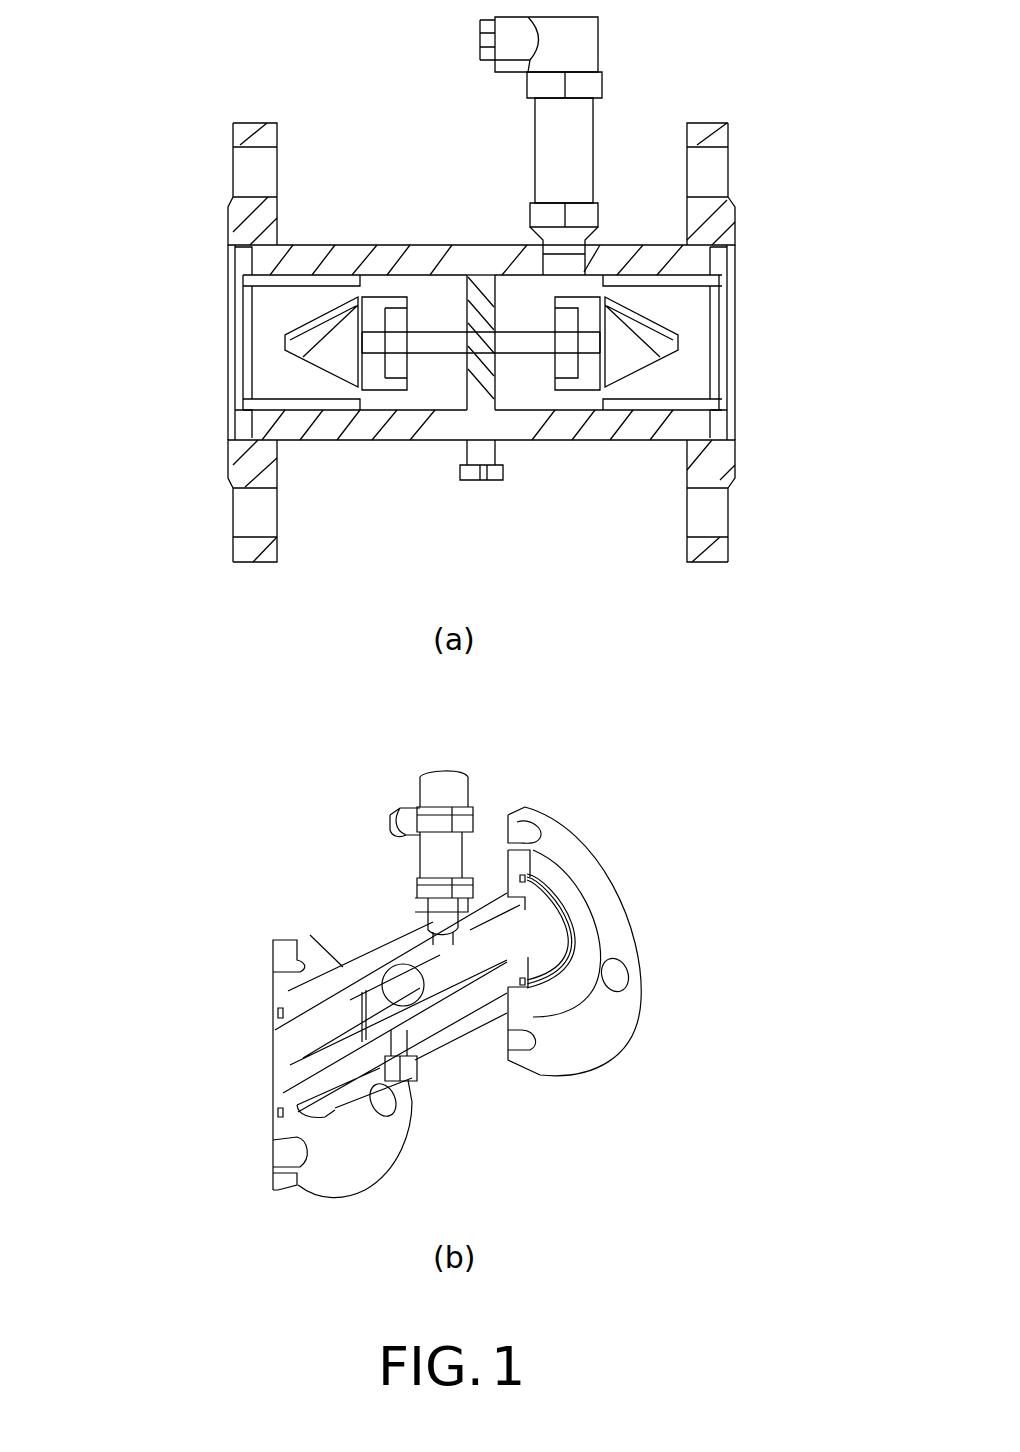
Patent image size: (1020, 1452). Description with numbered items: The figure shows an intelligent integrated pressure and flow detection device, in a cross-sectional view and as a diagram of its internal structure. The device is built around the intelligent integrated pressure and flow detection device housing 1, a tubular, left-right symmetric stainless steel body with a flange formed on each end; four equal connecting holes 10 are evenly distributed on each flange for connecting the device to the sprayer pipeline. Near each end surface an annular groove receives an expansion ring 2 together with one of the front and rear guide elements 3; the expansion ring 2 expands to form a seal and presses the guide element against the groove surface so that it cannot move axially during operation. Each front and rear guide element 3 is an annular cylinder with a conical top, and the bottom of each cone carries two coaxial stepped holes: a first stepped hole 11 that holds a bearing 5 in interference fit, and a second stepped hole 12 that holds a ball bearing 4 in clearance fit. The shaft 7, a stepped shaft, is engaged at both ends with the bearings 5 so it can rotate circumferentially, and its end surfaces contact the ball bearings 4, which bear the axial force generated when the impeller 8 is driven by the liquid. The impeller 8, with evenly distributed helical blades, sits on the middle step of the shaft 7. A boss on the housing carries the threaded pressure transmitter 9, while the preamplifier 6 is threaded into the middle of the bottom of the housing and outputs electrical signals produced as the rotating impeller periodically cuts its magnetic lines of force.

The intelligent integrated pressure and flow detection device housing 1 is at (237, 215).
The expansion ring 2 is at (235, 253).
The front and rear guide element 3 is at (230, 273).
The ball bearing 4 is at (370, 390).
The bearing 5 is at (395, 378).
The preamplifier 6 is at (482, 440).
The shaft 7 is at (523, 340).
The impeller 8 is at (467, 278).
The CYT 101 pressure transmitter 9 is at (558, 173).
The connecting hole 10 is at (703, 173).
The first stepped hole 11 is at (395, 308).
The second stepped hole 12 is at (361, 296).